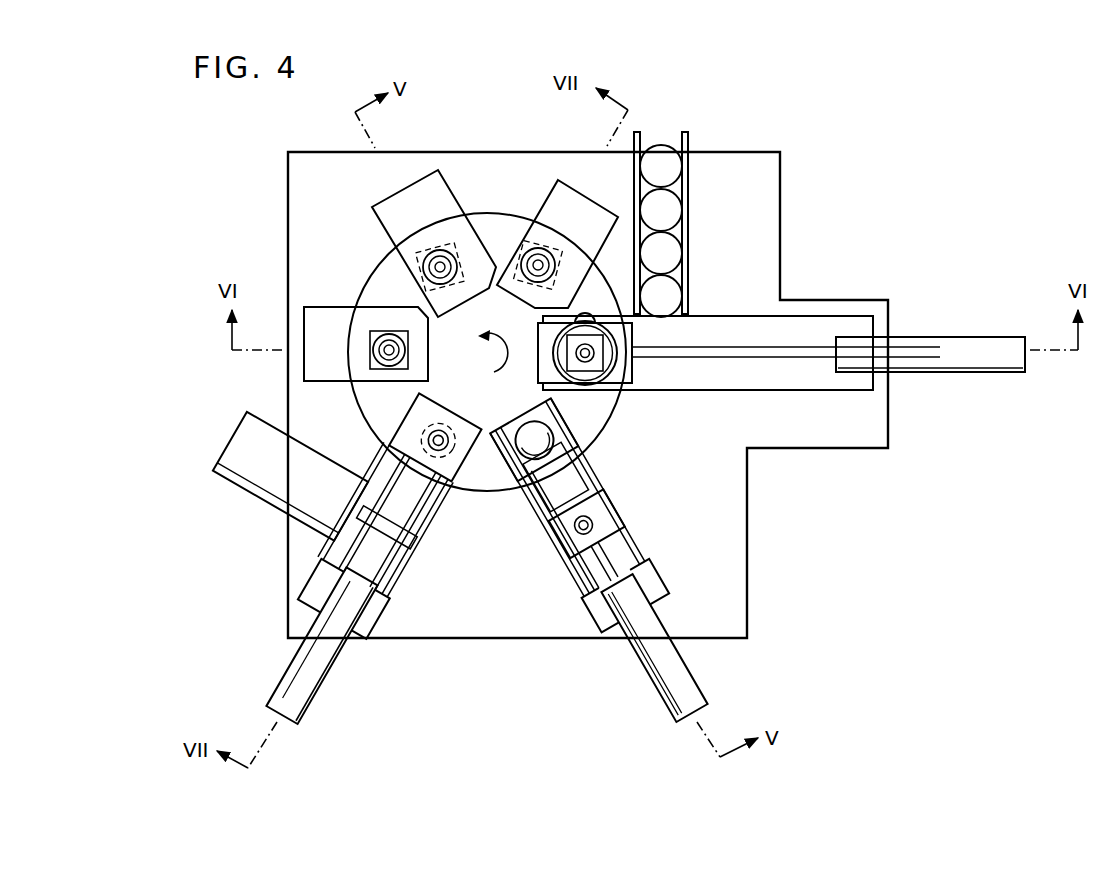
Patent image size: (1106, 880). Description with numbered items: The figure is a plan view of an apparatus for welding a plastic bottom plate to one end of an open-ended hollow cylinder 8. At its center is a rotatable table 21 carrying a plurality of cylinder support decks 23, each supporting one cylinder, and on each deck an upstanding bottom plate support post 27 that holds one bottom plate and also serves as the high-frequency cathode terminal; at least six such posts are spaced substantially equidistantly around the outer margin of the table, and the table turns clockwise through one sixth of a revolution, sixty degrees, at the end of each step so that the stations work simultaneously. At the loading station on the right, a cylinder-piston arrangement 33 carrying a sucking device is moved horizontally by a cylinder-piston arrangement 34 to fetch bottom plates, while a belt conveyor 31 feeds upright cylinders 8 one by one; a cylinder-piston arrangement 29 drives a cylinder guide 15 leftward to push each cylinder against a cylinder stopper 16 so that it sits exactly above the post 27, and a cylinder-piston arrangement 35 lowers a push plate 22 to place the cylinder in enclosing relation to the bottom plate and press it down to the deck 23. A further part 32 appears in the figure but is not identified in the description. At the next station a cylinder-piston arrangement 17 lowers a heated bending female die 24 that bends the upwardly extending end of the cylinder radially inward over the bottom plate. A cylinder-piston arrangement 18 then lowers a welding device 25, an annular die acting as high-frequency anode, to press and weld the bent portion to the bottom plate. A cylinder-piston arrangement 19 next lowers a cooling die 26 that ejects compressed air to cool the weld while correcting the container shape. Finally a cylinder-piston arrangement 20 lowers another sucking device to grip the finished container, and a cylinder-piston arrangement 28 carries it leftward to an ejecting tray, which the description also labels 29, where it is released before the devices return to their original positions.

The open-ended hollow cylinder 8 is at (682, 193).
The cylinder guide 15 is at (632, 370).
The cylinder stopper 16 is at (540, 371).
The cylinder-piston arrangement 17 is at (526, 262).
The cylinder-piston arrangement 18 is at (436, 258).
The cylinder-piston arrangement 19 is at (389, 365).
The cylinder-piston arrangement 20 is at (448, 445).
The rotatable table 21 is at (614, 430).
The push plate 22 is at (590, 323).
The cylinder support deck 23 is at (572, 481).
The bending female die 24 is at (546, 259).
The welding device 25 is at (452, 280).
The cooling die 26 is at (406, 352).
The bottom plate support post 27 is at (447, 413).
The cylinder-piston arrangement 28 is at (318, 677).
The cylinder-piston arrangement 29 is at (968, 346).
The belt conveyor 31 is at (688, 140).
The housing 32 is at (750, 391).
The cylinder-piston arrangement 33 is at (594, 526).
The cylinder-piston arrangement 34 is at (657, 630).
The cylinder-piston arrangement 35 is at (588, 356).